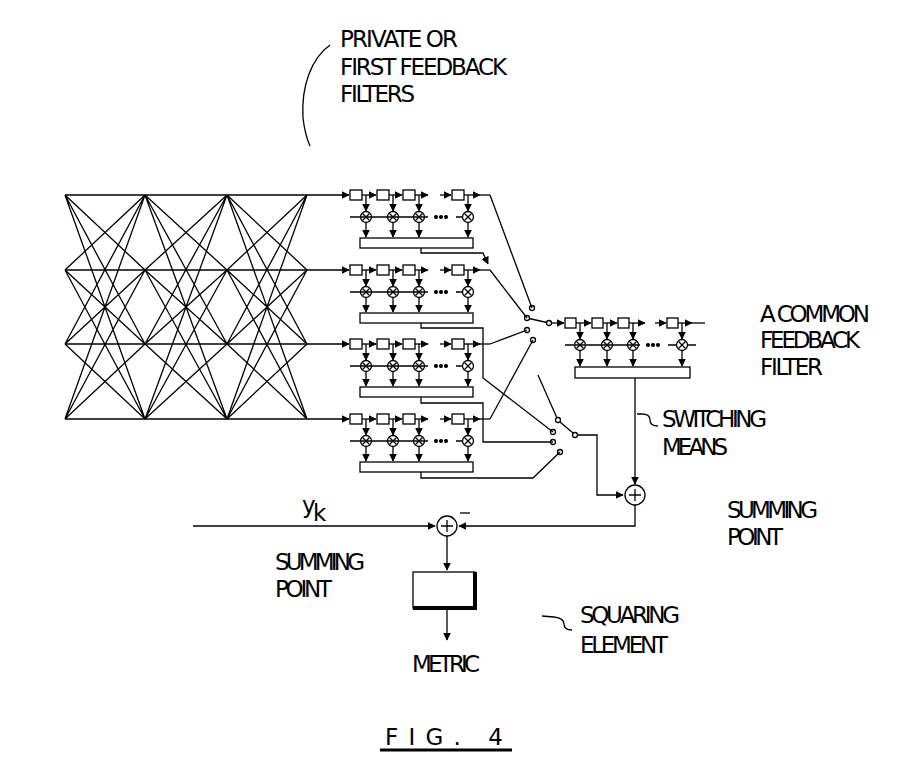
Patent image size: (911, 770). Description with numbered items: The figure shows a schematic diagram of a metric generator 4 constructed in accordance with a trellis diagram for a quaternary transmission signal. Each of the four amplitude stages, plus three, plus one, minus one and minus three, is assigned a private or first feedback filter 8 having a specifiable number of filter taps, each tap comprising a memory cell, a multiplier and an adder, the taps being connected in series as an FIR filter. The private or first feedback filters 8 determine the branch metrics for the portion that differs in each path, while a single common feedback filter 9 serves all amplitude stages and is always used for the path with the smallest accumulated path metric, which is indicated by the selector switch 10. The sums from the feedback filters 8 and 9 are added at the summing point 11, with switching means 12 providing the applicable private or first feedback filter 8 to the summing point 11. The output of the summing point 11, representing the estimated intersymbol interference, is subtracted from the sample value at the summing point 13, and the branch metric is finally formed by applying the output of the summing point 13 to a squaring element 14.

The metric generator 4 is at (378, 394).
The private or first feedback filter 8 is at (343, 230).
The common feedback filter 9 is at (696, 345).
The selector switch 10 is at (544, 318).
The summing point 11 is at (647, 498).
The switching means 12 is at (578, 427).
The summing point 13 is at (437, 537).
The squaring element 14 is at (477, 590).